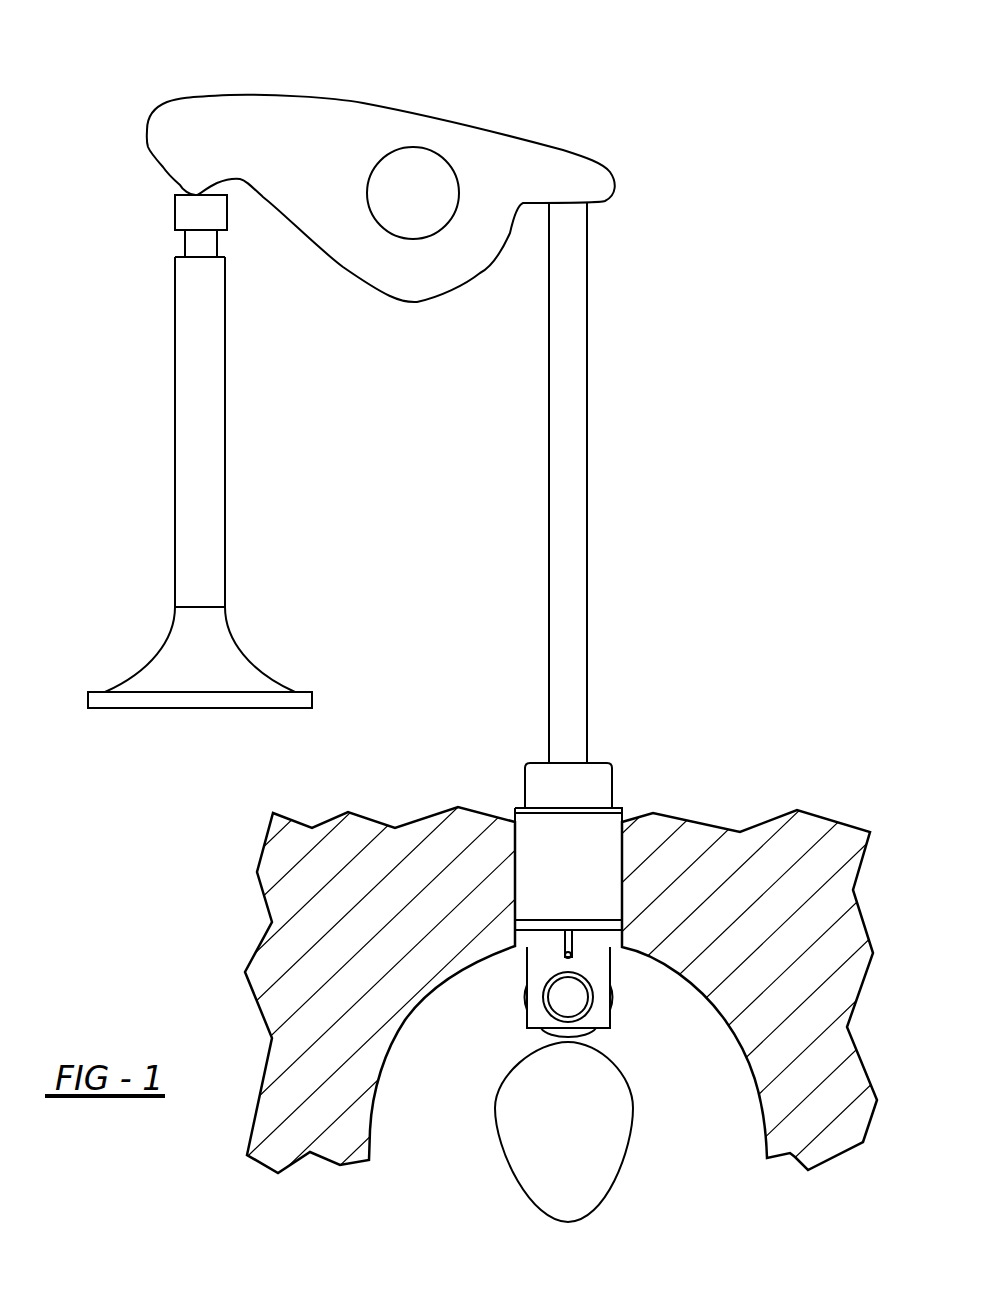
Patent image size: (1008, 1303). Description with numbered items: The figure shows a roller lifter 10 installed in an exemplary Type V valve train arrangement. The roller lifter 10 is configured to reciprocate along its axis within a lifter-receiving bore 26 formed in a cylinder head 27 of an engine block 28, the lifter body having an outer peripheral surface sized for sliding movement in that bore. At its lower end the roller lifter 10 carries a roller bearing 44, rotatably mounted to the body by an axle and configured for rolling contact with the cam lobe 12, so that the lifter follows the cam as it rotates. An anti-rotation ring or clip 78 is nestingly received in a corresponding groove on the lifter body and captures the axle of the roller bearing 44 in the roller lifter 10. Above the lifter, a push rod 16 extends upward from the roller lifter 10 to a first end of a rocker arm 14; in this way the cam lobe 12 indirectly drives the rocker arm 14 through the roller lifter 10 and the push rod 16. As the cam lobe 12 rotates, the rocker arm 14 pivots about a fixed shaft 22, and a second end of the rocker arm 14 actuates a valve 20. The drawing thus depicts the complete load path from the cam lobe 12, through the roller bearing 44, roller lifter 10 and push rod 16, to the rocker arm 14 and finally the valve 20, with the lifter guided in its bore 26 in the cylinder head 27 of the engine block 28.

The roller lifter 10 is at (588, 850).
The cam lobe 12 is at (542, 1165).
The rocker arm 14 is at (215, 95).
The push rod 16 is at (580, 477).
The valve 20 is at (190, 428).
The fixed shaft 22 is at (413, 192).
The lifter-receiving bore 26 is at (522, 830).
The cylinder head 27 is at (757, 1028).
The engine block 28 is at (312, 920).
The roller bearing 44 is at (613, 998).
The anti-rotation ring or clip 78 is at (547, 923).